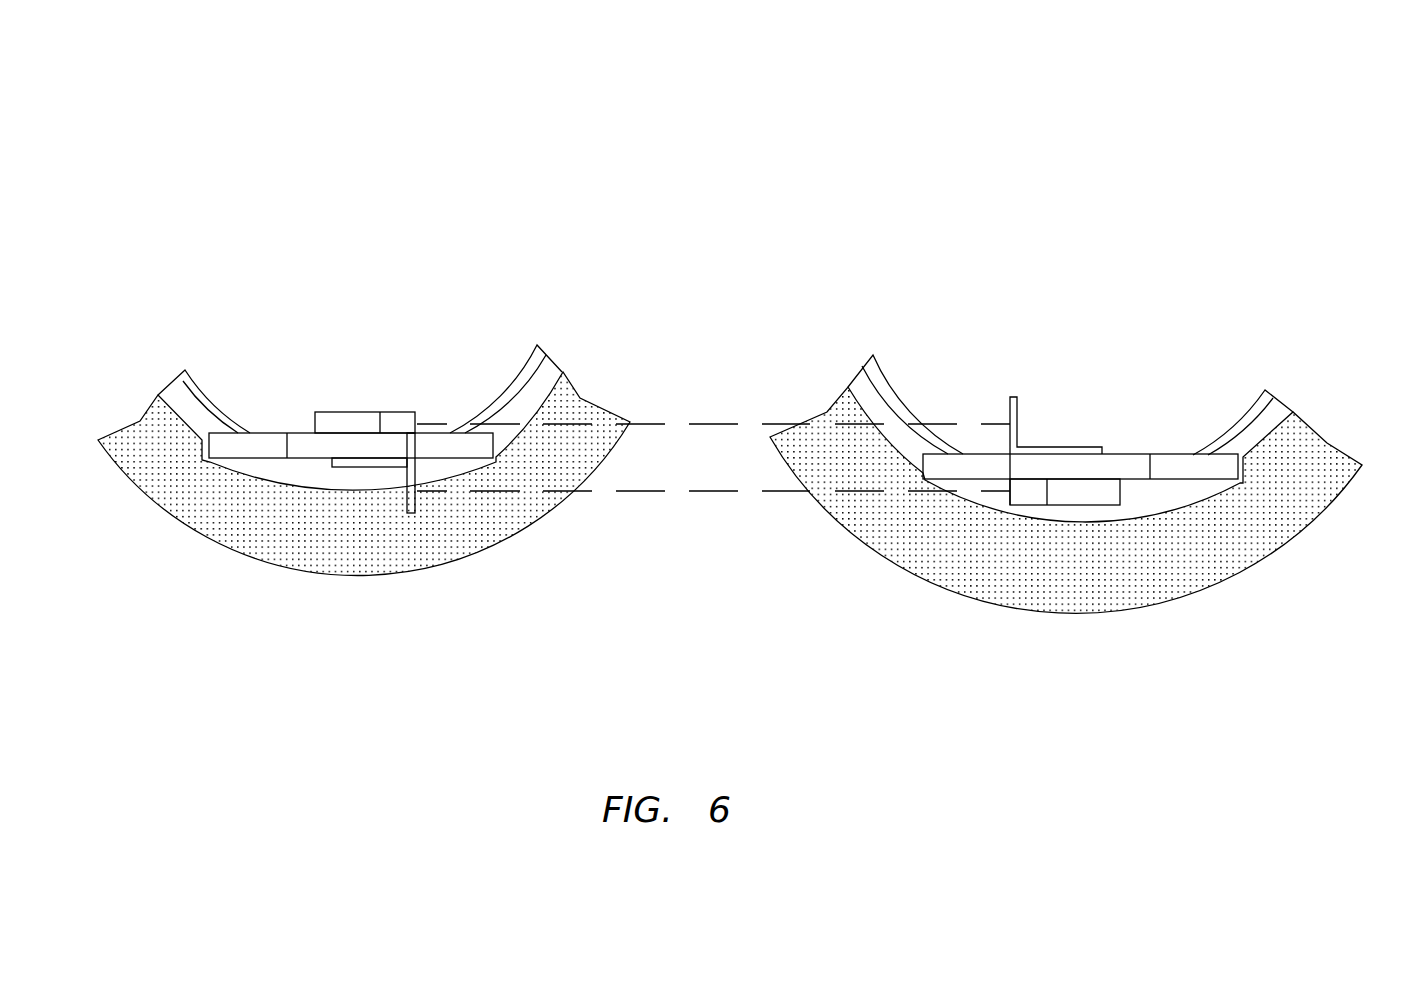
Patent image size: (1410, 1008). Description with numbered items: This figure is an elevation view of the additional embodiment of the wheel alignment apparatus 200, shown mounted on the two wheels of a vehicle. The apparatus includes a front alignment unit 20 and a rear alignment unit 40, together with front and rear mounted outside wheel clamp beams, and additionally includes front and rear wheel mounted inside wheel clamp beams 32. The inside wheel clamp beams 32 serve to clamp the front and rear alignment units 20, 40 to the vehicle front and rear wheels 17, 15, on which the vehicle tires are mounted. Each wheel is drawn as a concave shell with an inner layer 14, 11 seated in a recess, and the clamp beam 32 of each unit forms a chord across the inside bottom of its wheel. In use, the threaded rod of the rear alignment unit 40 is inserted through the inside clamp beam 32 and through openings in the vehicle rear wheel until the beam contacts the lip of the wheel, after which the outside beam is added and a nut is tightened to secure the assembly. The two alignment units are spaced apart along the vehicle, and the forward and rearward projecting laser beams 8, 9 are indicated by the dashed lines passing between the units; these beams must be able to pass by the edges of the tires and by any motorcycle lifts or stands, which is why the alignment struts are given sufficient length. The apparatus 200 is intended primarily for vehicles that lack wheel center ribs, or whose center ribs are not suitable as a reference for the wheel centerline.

The wheel alignment apparatus 200 is at (233, 163).
The rear alignment unit 40 is at (352, 355).
The front alignment unit 20 is at (1043, 358).
The vehicle rear wheel 14 is at (173, 383).
The second inner shell layer 11 is at (1287, 412).
The vehicle rear wheel 15 is at (223, 547).
The vehicle front wheel 17 is at (1200, 588).
The inside wheel clamp beam 32 is at (268, 433).
The forward projecting laser beam 8 is at (647, 424).
The rearward projecting laser beam 9 is at (648, 492).